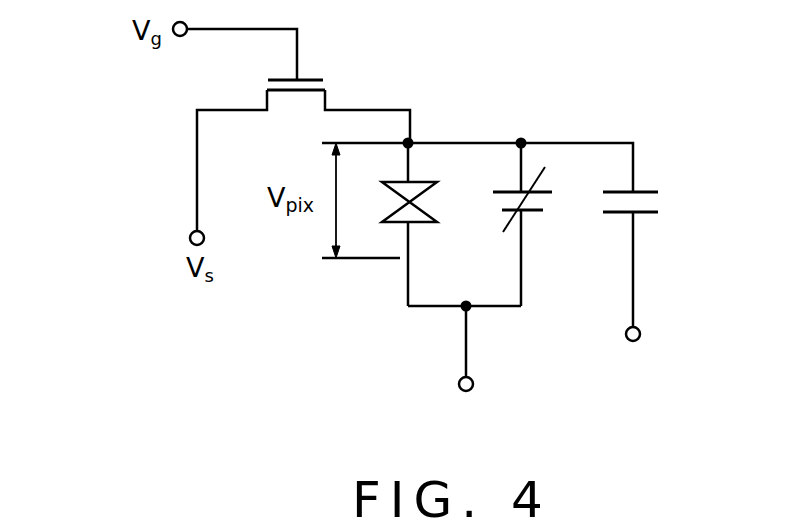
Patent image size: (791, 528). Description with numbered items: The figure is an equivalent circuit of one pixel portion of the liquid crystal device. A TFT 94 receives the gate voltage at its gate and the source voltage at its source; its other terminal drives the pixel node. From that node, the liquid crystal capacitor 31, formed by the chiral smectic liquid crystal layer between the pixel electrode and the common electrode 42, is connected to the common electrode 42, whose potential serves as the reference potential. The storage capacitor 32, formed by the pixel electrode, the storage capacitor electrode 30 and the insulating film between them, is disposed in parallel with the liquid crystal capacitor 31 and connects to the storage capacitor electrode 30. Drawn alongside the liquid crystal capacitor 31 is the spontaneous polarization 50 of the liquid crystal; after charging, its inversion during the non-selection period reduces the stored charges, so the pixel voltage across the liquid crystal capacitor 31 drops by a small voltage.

The TFT 94 is at (327, 89).
The liquid crystal capacitor (Clc) 31 is at (422, 217).
The spontaneous polarization 50 is at (537, 202).
The storage capacitor (Cs) 32 is at (660, 203).
The storage capacitor electrode 30 is at (633, 353).
The common electrode 42 is at (464, 367).